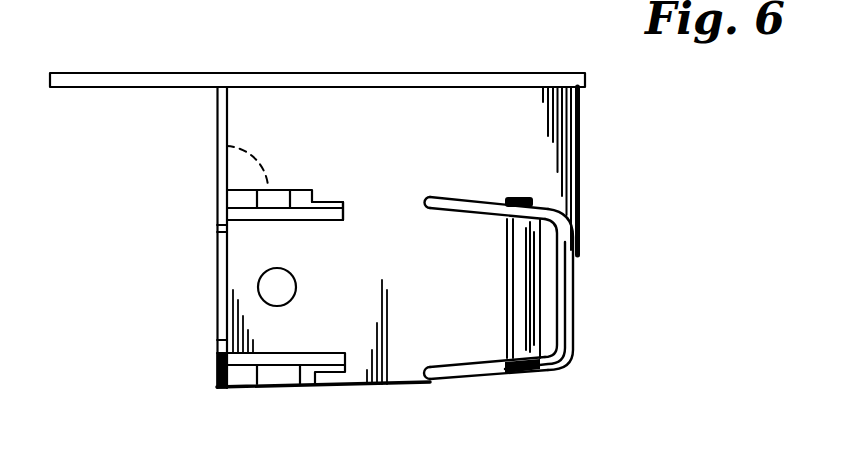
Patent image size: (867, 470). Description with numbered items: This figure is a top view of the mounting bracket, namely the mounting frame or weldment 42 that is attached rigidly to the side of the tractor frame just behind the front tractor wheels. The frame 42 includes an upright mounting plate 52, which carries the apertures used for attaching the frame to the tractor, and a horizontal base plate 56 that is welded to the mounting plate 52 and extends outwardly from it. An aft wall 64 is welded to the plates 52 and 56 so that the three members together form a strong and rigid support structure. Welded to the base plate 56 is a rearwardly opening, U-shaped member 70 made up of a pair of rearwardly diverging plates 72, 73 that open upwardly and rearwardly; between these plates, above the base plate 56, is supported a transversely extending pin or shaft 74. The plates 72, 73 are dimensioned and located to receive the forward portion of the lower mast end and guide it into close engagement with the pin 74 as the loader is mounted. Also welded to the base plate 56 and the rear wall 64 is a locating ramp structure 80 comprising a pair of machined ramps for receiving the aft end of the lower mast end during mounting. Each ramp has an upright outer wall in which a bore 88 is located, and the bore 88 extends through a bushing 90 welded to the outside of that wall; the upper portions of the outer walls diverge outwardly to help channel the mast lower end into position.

The mounting frame 42 is at (170, 229).
The upright mounting plate 52 is at (346, 73).
The horizontal base plate 56 is at (567, 150).
The aft wall 64 is at (217, 298).
The U-shaped member 70 is at (529, 261).
The diverging plate 72 is at (460, 198).
The diverging plate 73 is at (475, 365).
The pin 74 is at (507, 263).
The locating ramp structure 80 is at (352, 196).
The bore 88 is at (222, 146).
The bushing 90 is at (300, 190).